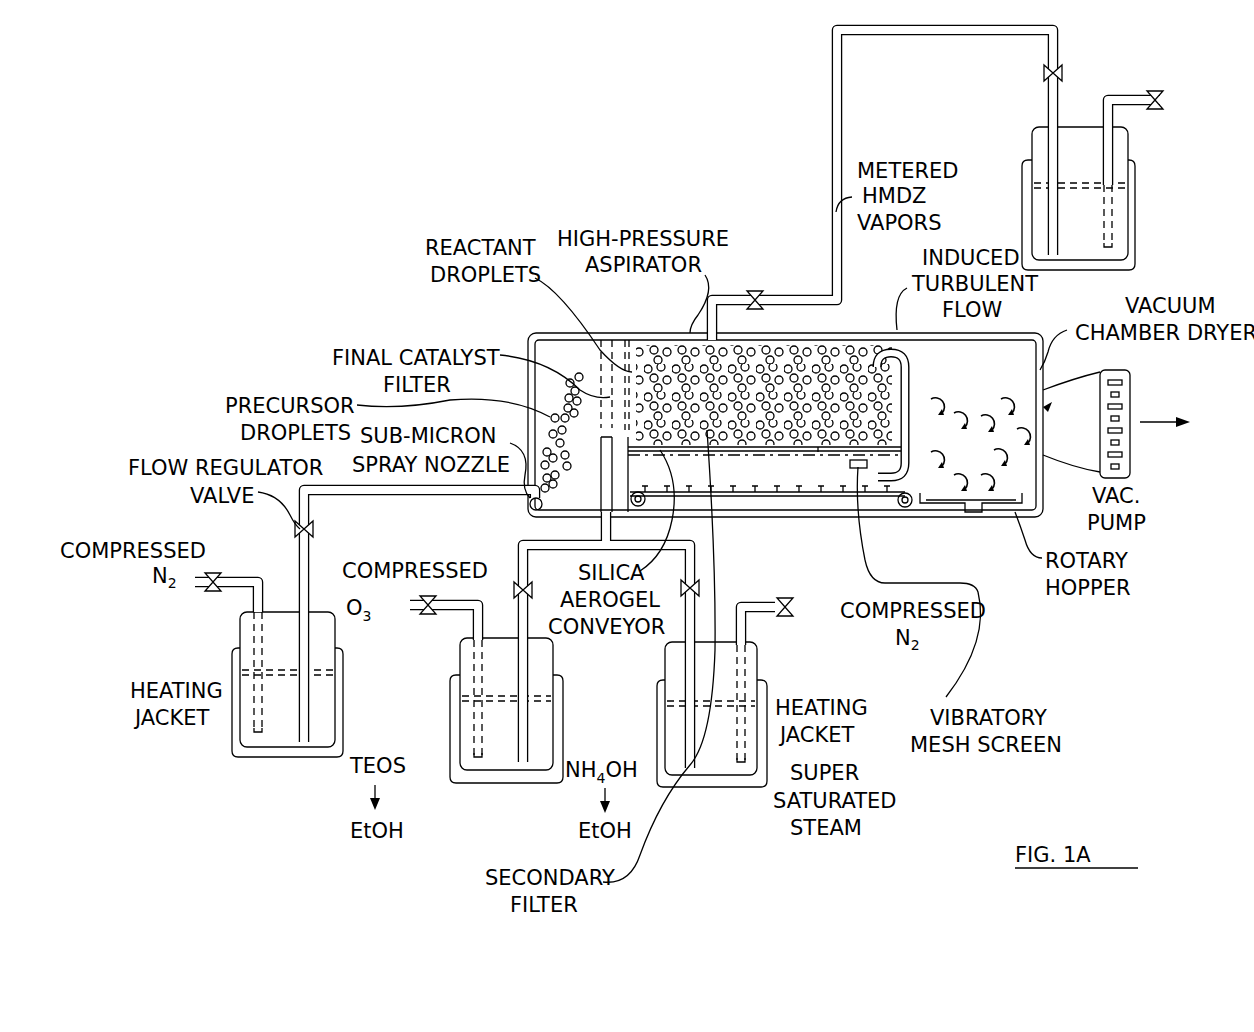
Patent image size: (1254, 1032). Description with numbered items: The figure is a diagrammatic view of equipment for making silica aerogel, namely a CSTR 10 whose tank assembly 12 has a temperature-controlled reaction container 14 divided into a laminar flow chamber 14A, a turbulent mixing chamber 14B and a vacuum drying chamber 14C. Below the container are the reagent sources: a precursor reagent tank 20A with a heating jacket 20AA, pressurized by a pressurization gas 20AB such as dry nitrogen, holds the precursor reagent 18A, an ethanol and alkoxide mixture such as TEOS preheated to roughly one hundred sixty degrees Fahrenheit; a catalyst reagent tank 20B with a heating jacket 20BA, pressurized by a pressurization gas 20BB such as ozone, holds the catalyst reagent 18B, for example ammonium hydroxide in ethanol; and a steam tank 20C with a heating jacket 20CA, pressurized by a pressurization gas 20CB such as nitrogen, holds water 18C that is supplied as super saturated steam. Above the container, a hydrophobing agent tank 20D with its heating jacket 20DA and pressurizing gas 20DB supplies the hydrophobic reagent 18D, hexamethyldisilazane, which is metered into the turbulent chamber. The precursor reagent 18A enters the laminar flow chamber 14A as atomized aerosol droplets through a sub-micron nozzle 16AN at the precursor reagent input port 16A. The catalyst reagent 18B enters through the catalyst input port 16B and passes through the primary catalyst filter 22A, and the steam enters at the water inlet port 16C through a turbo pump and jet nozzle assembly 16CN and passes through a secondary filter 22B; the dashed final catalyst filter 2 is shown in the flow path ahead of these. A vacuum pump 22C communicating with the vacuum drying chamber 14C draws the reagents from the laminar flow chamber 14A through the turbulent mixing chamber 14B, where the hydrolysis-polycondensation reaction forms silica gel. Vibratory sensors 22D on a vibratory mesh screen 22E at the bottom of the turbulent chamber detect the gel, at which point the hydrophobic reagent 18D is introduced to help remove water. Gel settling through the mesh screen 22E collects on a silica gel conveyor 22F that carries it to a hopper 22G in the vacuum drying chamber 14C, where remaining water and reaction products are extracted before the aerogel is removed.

The CSTR 10 is at (723, 178).
The final catalyst filter 2 is at (555, 350).
The tank assembly 12 is at (1042, 656).
The reaction container 14 is at (1013, 337).
The laminar flow chamber 14A is at (547, 347).
The turbulent mixing chamber 14B is at (825, 368).
The vacuum drying chamber 14C is at (1025, 385).
The precursor reagent input port 16A is at (512, 497).
The sub-micron nozzle 16AN is at (530, 513).
The catalyst input port 16B is at (600, 518).
The water inlet port 16C is at (632, 432).
The turbo pump and jet nozzle assembly 16CN is at (771, 521).
The precursor reagent 18A is at (300, 745).
The catalyst reagent 18B is at (498, 760).
The water 18C is at (716, 760).
The hydrophobic reagent 18D is at (878, 160).
The precursor reagent tank 20A is at (240, 617).
The heating jacket 20AA is at (233, 722).
The pressurization gas 20AB is at (190, 580).
The catalyst reagent tank 20B is at (460, 650).
The heating jacket 20BA is at (563, 681).
The pressurization gas 20BB is at (408, 606).
The steam tank 20C is at (768, 656).
The heating jacket 20CA is at (655, 700).
The pressurization gas 20CB is at (832, 607).
The hydrophobing agent tank 20D is at (1125, 150).
The heating jacket 20DA is at (1135, 256).
The pressurizing gas 20DB is at (1164, 100).
The catalyst filter 22A is at (603, 340).
The secondary filter 22B is at (624, 340).
The vacuum pump 22C is at (1133, 478).
The vibratory sensors 22D is at (863, 468).
The vibratory mesh screen 22E is at (818, 452).
The silica gel conveyor 22F is at (872, 566).
The hopper 22G is at (1013, 512).